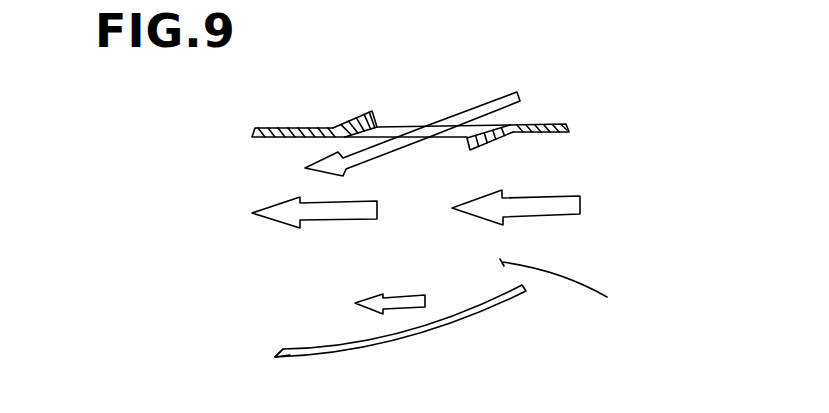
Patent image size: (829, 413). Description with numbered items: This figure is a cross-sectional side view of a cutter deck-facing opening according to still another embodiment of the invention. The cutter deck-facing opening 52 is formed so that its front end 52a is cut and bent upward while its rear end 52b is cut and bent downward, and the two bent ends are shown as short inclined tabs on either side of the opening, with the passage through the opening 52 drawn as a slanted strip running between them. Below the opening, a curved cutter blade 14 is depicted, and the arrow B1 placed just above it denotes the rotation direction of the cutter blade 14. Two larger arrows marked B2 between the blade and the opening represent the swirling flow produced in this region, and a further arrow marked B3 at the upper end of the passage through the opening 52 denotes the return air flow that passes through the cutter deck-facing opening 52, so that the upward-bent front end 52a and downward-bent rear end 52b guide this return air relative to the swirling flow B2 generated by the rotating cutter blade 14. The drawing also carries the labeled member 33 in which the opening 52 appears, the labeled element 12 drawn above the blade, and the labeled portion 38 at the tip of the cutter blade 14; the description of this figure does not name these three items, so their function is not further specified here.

The plate 33 is at (542, 113).
The cutter deck-facing opening 52 is at (405, 127).
The front end 52a is at (378, 120).
The rear end 52b is at (467, 138).
The guide member 12 is at (573, 286).
The cutter blade 14 is at (490, 318).
The tip end of curved plate 38 is at (273, 350).
The rotation direction of the cutter blade B1 is at (390, 287).
The swirling flow B2 is at (416, 224).
The return air flow B3 is at (500, 77).